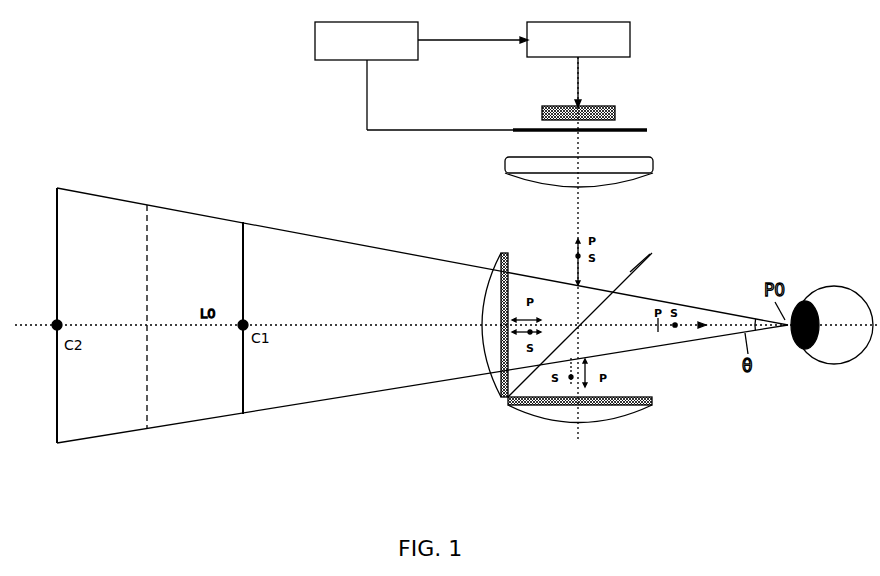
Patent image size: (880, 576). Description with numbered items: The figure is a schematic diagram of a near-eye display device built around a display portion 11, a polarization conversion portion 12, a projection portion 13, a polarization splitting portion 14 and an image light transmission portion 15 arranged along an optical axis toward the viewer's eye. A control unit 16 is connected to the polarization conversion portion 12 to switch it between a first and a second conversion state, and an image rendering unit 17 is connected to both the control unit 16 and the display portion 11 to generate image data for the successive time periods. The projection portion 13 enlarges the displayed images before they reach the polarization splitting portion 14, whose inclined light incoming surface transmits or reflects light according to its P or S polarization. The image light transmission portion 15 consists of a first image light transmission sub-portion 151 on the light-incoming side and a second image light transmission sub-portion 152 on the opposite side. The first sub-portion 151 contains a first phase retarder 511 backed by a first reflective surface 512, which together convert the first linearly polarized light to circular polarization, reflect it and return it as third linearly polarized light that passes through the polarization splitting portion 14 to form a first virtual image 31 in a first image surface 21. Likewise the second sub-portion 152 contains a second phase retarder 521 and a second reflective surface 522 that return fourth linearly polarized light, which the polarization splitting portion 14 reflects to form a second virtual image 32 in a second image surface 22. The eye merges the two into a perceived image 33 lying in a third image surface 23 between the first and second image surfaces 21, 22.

The display portion 11 is at (540, 107).
The polarization conversion portion 12 is at (647, 129).
The projection portion 13 is at (653, 173).
The polarization splitting portion 14 is at (642, 273).
The image light transmission portion 15 is at (615, 325).
The first image light transmission sub-portion 151 is at (513, 293).
The second image light transmission sub-portion 152 is at (635, 416).
The first phase retarder 511 is at (506, 262).
The first reflective surface 512 is at (487, 312).
The second phase retarder 521 is at (650, 398).
The second reflective surface 522 is at (593, 433).
The control unit 16 is at (414, 76).
The image rendering unit 17 is at (524, 64).
The first image surface 21 is at (245, 388).
The second image surface 22 is at (57, 398).
The third image surface 23 is at (149, 392).
The first virtual image 31 is at (241, 224).
The second virtual image 32 is at (55, 207).
The perceived image 33 is at (145, 210).